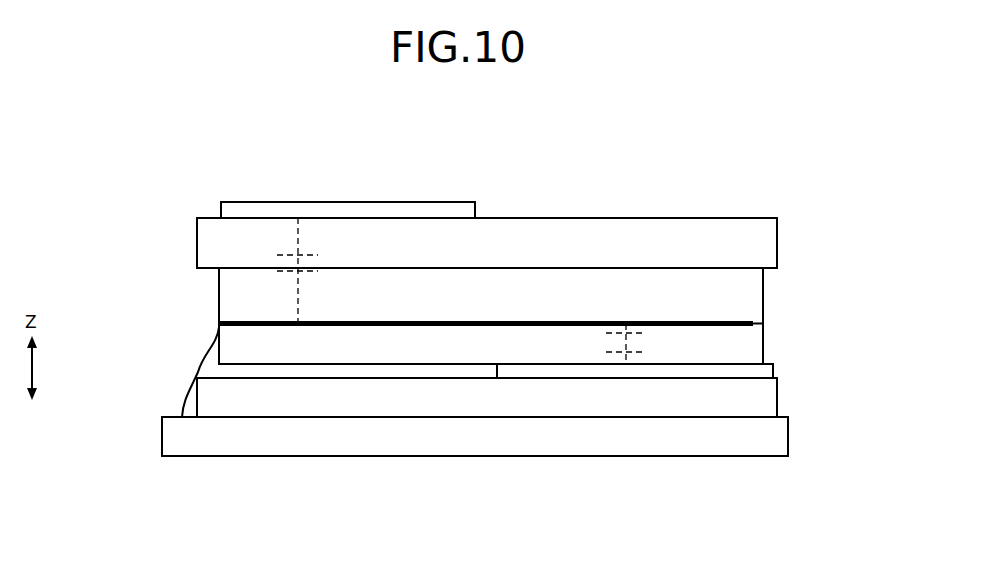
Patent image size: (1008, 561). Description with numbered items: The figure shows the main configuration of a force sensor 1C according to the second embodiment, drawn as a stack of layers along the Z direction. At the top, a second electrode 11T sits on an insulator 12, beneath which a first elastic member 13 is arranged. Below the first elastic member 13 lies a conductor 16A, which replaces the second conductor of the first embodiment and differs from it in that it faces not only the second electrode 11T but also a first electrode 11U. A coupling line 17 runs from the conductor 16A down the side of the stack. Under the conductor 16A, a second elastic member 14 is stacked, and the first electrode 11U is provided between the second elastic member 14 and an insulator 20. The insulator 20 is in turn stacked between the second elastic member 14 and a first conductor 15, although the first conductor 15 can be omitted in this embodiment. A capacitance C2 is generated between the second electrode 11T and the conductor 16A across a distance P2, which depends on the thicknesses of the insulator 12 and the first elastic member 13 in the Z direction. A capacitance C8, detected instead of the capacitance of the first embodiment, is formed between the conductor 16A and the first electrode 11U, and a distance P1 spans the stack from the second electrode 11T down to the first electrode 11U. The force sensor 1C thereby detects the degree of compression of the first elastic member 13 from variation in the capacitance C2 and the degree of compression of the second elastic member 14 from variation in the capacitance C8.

The force sensor 1C is at (172, 160).
The second electrode 11T is at (445, 202).
The first electrode 11U is at (775, 371).
The insulator 12 is at (765, 243).
The first elastic member 13 is at (755, 297).
The second elastic member 14 is at (755, 345).
The first conductor 15 is at (775, 440).
The conductor 16A is at (228, 322).
The coupling line 17 is at (197, 358).
The insulator 20 is at (765, 398).
The capacitance C2 is at (298, 236).
The capacitance C8 is at (625, 360).
The distance P1 is at (681, 226).
The distance P2 is at (408, 226).